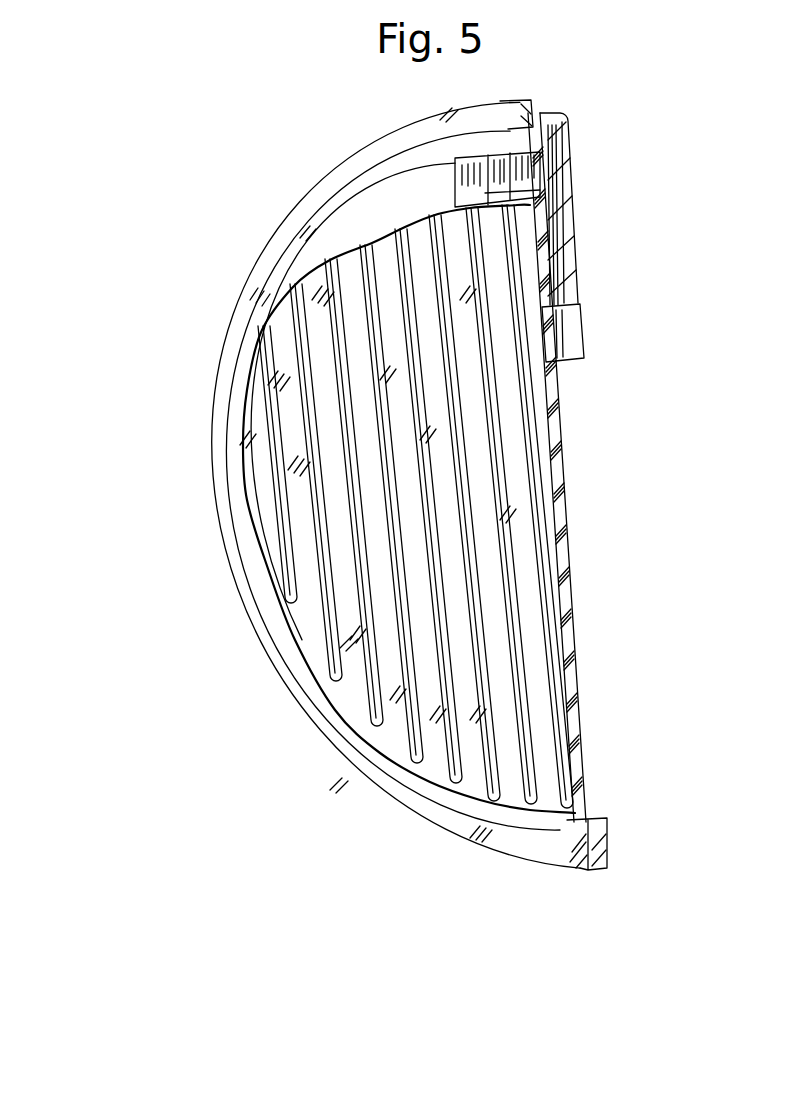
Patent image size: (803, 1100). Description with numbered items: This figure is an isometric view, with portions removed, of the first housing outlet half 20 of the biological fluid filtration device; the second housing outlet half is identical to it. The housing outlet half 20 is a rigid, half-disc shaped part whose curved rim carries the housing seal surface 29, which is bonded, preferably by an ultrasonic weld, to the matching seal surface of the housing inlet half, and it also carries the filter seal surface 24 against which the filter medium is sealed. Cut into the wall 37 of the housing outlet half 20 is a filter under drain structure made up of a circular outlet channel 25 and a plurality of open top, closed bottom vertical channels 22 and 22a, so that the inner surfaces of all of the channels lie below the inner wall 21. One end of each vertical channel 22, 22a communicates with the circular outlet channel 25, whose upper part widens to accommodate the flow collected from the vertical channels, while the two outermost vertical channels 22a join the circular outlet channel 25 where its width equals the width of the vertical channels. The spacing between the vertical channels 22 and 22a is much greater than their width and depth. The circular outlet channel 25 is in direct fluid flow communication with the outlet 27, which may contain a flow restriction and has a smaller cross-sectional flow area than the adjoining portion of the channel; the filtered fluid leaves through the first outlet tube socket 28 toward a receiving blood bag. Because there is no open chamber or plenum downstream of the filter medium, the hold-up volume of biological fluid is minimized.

The first housing outlet half 20 is at (152, 357).
The inner wall 21 is at (523, 540).
The vertical channels 22 is at (335, 663).
The outermost vertical channels 22a is at (280, 468).
The filter seal surface 24 is at (490, 828).
The circular outlet channel 25 is at (387, 200).
The outlet 27 is at (548, 250).
The first outlet tube socket 28 is at (553, 350).
The housing seal surface 29 is at (553, 863).
The wall 37 is at (552, 454).